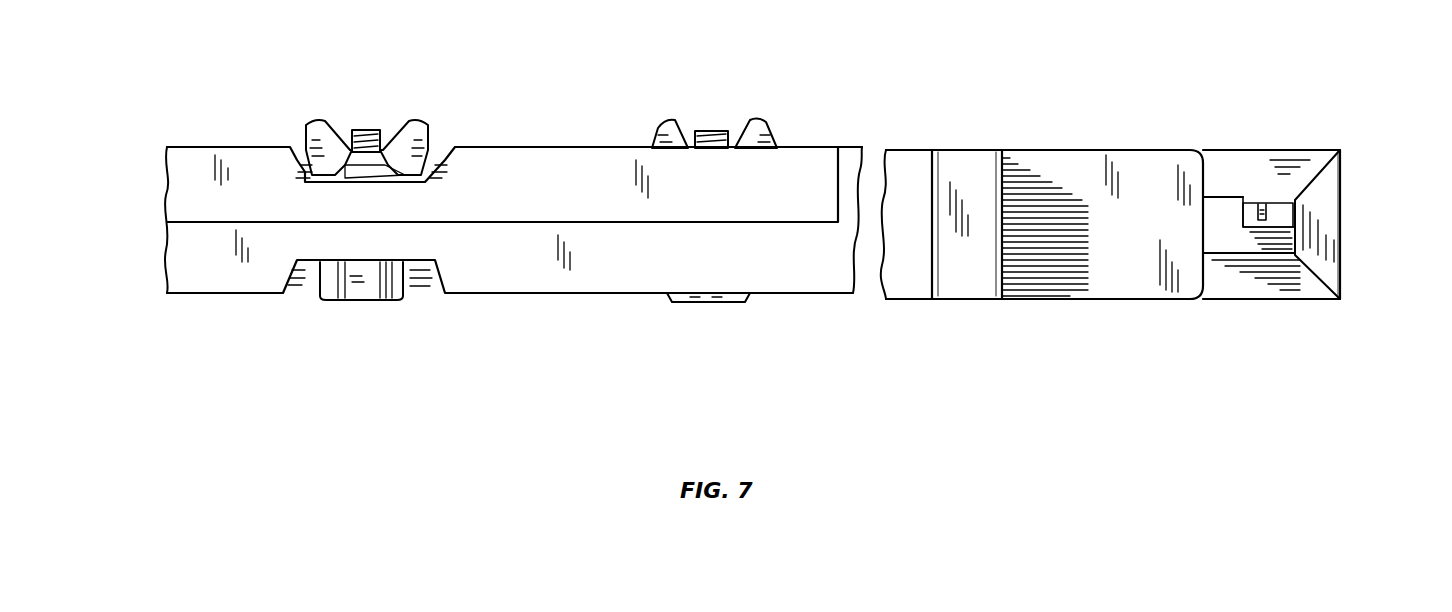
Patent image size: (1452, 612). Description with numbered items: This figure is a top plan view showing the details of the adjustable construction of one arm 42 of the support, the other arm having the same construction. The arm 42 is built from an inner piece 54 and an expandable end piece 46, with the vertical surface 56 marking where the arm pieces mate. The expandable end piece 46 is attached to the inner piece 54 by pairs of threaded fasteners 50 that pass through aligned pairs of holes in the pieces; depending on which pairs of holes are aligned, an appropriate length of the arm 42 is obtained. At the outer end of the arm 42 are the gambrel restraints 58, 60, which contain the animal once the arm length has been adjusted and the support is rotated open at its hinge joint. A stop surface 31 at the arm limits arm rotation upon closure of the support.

The inner piece 54 is at (281, 146).
The vertical surface 56 is at (170, 221).
The threaded fasteners 50 is at (712, 129).
The expandable end piece 46 is at (1118, 151).
The gambrel restraint 58 is at (957, 285).
The gambrel restraint 60 is at (1248, 290).
The stop surface 31 is at (1264, 206).
The arm 42 is at (1340, 235).